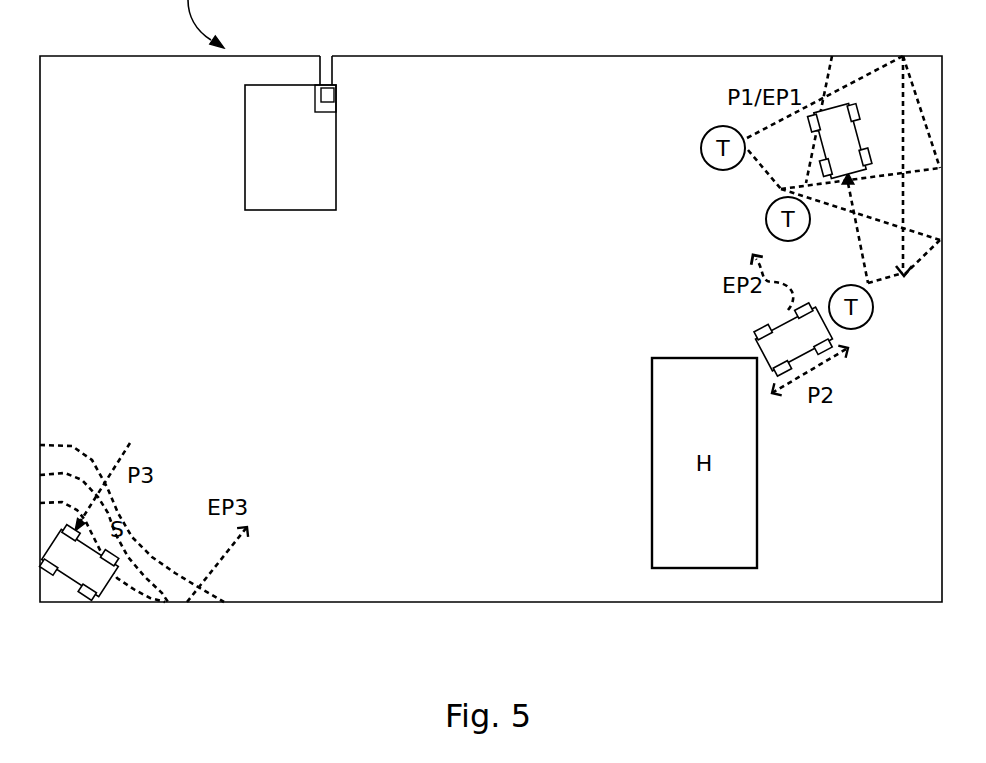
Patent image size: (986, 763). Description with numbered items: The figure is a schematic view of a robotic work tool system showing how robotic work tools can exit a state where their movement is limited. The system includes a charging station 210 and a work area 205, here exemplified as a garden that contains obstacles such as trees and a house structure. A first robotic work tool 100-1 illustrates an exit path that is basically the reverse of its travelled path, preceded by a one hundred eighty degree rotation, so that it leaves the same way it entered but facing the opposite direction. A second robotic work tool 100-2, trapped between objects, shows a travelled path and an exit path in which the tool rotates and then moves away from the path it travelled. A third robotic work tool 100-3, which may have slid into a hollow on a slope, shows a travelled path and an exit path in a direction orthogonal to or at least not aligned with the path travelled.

The work area 205 is at (148, 86).
The charging station 210 is at (245, 125).
The first robotic work tool 100-1 is at (840, 141).
The second robotic work tool 100-2 is at (794, 339).
The third robotic work tool 100-3 is at (80, 563).